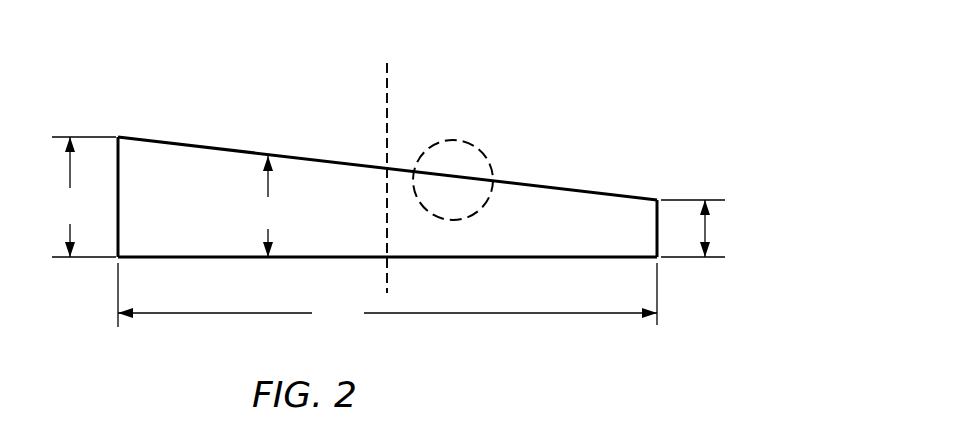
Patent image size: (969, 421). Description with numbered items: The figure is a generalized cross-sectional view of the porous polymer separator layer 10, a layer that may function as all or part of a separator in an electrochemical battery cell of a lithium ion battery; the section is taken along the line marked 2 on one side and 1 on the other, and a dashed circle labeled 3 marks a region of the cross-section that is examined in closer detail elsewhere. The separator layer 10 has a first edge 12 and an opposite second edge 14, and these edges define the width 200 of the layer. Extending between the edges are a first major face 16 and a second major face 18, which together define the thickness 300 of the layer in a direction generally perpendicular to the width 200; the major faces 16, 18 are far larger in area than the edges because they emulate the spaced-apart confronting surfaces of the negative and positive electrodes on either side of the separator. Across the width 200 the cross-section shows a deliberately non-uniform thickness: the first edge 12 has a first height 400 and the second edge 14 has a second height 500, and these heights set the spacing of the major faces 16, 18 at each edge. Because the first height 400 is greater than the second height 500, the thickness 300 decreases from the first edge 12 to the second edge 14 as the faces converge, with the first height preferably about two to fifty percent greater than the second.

The porous polymer separator layer 10 is at (153, 78).
The first edge 12 is at (116, 162).
The second edge 14 is at (658, 237).
The first major face 16 is at (182, 143).
The second major face 18 is at (152, 259).
The detail region shown in FIG. 3 is at (486, 139).
The section line side 1 is at (378, 99).
The section line side 2 is at (413, 99).
The first height 400 is at (92, 221).
The thickness 300 is at (289, 226).
The second height 500 is at (705, 230).
The width 200 is at (359, 329).